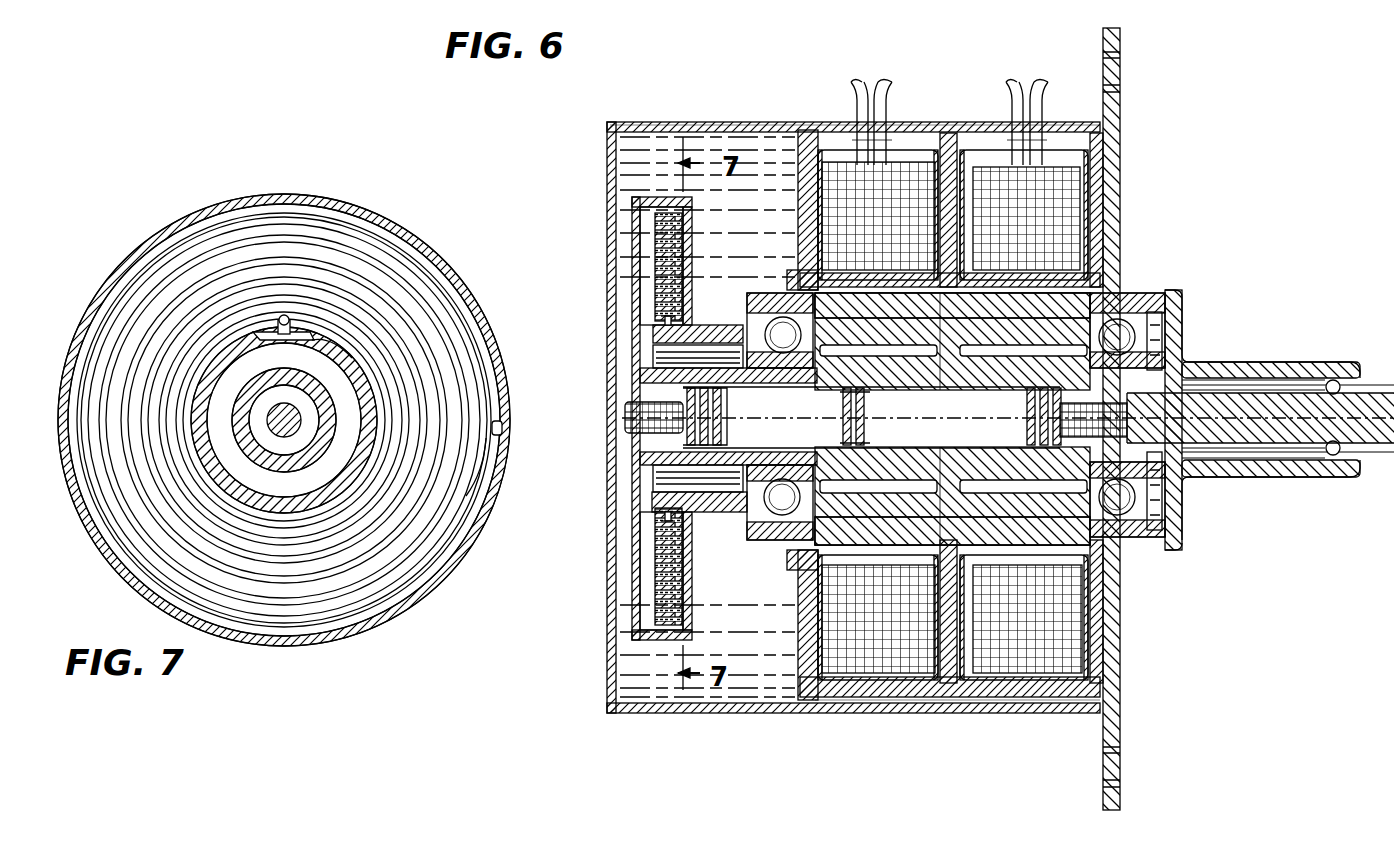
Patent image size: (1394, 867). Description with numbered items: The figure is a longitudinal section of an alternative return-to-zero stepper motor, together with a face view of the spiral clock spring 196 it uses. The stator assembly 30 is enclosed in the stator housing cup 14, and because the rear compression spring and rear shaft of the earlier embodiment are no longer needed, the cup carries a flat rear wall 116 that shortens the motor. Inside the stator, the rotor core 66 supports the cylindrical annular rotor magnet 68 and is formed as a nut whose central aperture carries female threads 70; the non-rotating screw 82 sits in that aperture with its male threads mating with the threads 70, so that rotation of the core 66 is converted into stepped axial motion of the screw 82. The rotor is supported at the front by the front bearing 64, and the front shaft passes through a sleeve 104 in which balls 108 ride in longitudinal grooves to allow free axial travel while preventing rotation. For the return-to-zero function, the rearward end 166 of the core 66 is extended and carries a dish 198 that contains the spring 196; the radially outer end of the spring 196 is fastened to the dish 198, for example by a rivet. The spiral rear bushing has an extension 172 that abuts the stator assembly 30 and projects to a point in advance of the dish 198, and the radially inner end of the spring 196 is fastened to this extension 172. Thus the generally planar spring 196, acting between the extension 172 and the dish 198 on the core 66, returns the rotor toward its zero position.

In FIG. 6, the stator housing cup 14 is at (692, 122).
In FIG. 6, the stator assembly 30 is at (983, 718).
In FIG. 6, the front bearing 64 is at (1148, 552).
In FIG. 6, the rotor core 66 is at (912, 480).
In FIG. 6, the rotor magnet 68 is at (952, 520).
In FIG. 6, the female threads 70 is at (844, 446).
In FIG. 6, the screw 82 is at (800, 423).
In FIG. 6, the sleeve 104 is at (1307, 362).
In FIG. 6, the balls 108 is at (1333, 378).
In FIG. 6, the flat rear wall 116 is at (608, 170).
In FIG. 7, the rearward end 166 is at (304, 370).
In FIG. 6, the rearward end 166 is at (632, 456).
In FIG. 7, the extension 172 is at (306, 492).
In FIG. 6, the extension 172 is at (710, 325).
In FIG. 7, the spiral clock spring 196 is at (416, 563).
In FIG. 6, the spiral clock spring 196 is at (655, 565).
In FIG. 7, the dish 198 is at (346, 634).
In FIG. 6, the dish 198 is at (632, 633).